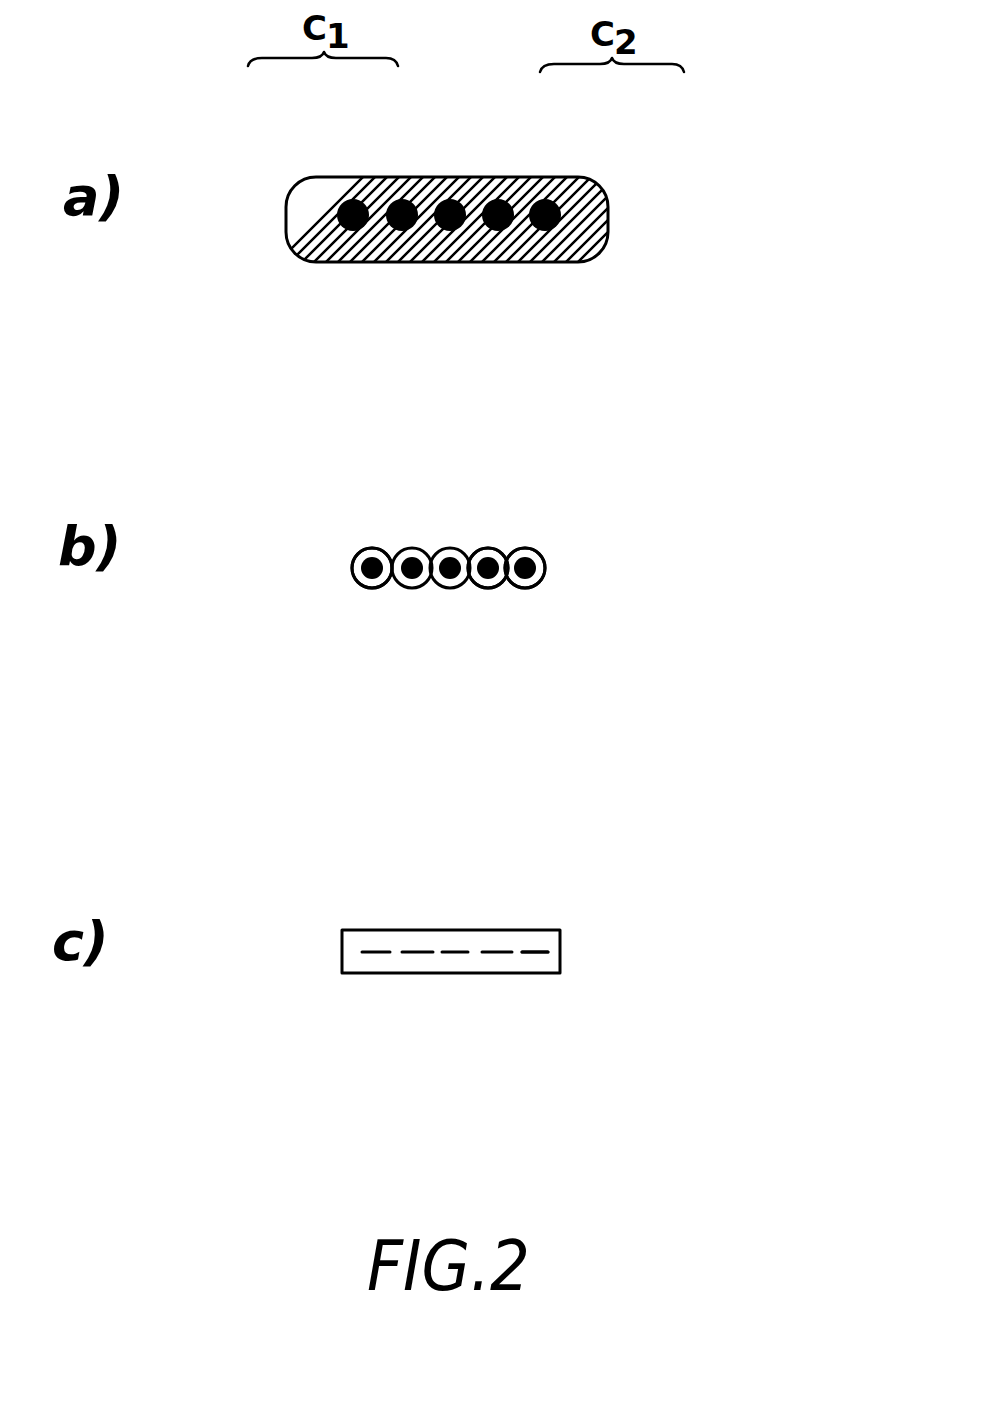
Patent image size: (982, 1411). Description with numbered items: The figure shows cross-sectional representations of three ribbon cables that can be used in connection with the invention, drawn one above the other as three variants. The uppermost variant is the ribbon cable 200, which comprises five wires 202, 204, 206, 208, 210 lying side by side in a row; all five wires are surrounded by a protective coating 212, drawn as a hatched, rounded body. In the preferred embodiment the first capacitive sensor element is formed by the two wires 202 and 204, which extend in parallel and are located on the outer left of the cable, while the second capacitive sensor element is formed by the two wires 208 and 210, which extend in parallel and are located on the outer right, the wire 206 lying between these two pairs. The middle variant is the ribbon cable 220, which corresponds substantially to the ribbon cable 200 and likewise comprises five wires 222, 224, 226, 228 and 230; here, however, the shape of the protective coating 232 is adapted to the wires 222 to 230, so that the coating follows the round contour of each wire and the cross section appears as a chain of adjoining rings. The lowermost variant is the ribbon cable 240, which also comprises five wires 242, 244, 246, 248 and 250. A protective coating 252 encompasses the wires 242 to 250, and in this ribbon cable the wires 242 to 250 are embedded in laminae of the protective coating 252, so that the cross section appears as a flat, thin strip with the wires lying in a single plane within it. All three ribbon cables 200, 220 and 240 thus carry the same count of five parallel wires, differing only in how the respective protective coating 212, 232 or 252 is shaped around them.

The ribbon cable 200 is at (600, 249).
The wire 202 is at (348, 200).
The wire 204 is at (400, 200).
The wire 206 is at (450, 200).
The wire 208 is at (500, 200).
The wire 210 is at (550, 200).
The protective coating 212 is at (587, 205).
The ribbon cable 220 is at (547, 563).
The wire 222 is at (365, 550).
The wire 224 is at (412, 553).
The wire 226 is at (458, 548).
The wire 228 is at (480, 585).
The wire 230 is at (535, 585).
The protective coating 232 is at (368, 580).
The ribbon cable 240 is at (562, 958).
The wire 242 is at (374, 952).
The wire 244 is at (414, 948).
The wire 246 is at (455, 953).
The wire 248 is at (494, 950).
The wire 250 is at (538, 955).
The protective coating 252 is at (540, 935).